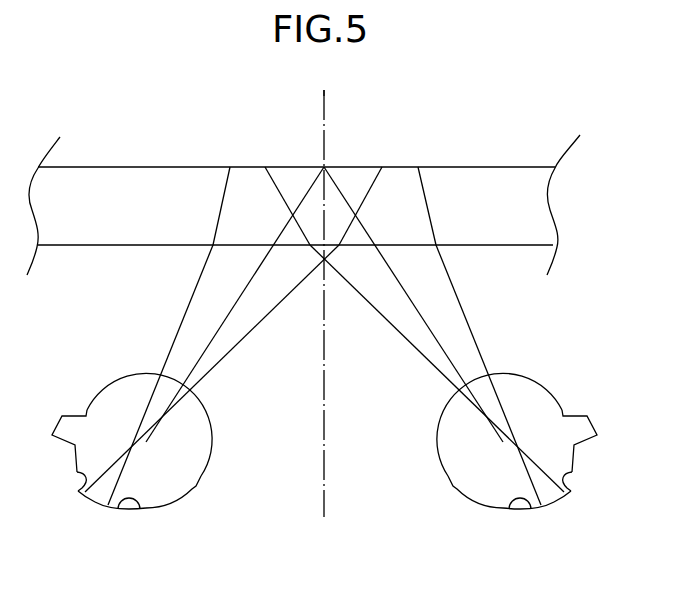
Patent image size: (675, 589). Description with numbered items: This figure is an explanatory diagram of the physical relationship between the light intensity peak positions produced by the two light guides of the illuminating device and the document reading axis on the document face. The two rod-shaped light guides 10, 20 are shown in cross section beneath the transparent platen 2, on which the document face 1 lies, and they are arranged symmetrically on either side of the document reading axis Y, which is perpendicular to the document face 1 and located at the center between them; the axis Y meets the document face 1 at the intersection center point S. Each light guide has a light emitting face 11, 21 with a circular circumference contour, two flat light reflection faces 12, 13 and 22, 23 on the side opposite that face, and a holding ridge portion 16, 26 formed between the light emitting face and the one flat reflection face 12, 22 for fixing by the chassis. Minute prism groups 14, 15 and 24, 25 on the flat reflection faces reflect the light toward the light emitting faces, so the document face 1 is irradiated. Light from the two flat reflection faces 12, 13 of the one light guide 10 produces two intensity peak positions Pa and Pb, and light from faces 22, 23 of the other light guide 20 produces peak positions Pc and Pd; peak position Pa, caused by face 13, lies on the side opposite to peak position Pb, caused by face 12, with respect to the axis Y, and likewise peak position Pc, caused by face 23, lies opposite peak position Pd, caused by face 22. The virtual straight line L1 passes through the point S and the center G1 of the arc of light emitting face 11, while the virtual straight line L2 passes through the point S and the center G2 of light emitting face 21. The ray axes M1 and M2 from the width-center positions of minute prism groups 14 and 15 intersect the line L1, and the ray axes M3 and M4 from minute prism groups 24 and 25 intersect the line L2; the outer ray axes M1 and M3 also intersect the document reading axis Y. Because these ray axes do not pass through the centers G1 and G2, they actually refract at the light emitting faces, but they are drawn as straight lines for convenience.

The document face 1 is at (163, 167).
The transparent platen 2 is at (500, 200).
The light guide 10 is at (208, 477).
The light emitting face 11 is at (205, 409).
The flat light reflection face 12 is at (78, 477).
The flat light reflection face 13 is at (140, 509).
The minute prism group 14 is at (77, 498).
The minute prism group 15 is at (104, 510).
The holding ridge portion 16 is at (63, 412).
The light guide 20 is at (441, 477).
The light emitting face 21 is at (444, 409).
The flat light reflection face 22 is at (571, 477).
The flat light reflection face 23 is at (509, 509).
The minute prism group 24 is at (572, 500).
The minute prism group 25 is at (545, 510).
The holding ridge portion 26 is at (586, 412).
The intersection center point S is at (325, 166).
The document reading axis Y is at (322, 94).
The light intensity peak position Pa is at (230, 167).
The light intensity peak position Pb is at (372, 167).
The light intensity peak position Pc is at (418, 167).
The light intensity peak position Pd is at (282, 167).
The virtual straight line L1 is at (232, 305).
The virtual straight line L2 is at (417, 305).
The ray axis M1 is at (232, 358).
The ray axis M2 is at (178, 328).
The ray axis M3 is at (417, 358).
The ray axis M4 is at (472, 328).
The center G1 is at (147, 442).
The center G2 is at (502, 442).